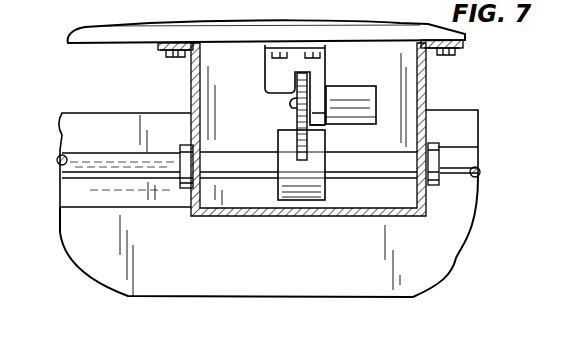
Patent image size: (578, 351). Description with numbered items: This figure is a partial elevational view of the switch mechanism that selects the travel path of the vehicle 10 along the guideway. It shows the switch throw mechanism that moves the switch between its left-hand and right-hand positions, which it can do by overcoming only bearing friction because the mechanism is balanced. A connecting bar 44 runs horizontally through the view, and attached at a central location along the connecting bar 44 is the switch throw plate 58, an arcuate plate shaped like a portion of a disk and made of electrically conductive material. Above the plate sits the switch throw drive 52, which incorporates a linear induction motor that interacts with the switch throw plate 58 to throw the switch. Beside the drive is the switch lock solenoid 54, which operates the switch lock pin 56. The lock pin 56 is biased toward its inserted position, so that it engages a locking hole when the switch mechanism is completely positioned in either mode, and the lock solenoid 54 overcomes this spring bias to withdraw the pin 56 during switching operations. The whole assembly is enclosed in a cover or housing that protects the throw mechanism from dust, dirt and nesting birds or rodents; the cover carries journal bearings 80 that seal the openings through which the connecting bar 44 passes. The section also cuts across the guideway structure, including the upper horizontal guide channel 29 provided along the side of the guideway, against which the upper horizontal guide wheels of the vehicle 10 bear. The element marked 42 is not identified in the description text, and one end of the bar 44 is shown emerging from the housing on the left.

The vehicle 10 is at (62, 33).
The upper horizontal guide channel 29 is at (440, 243).
The shaft right end 42 is at (468, 134).
The connecting bar 44 is at (86, 164).
The switch throw drive 52 is at (265, 80).
The switch lock solenoid 54 is at (363, 96).
The switch lock pin 56 is at (290, 103).
The switch throw plate 58 is at (297, 118).
The journal bearings 80 is at (182, 190).